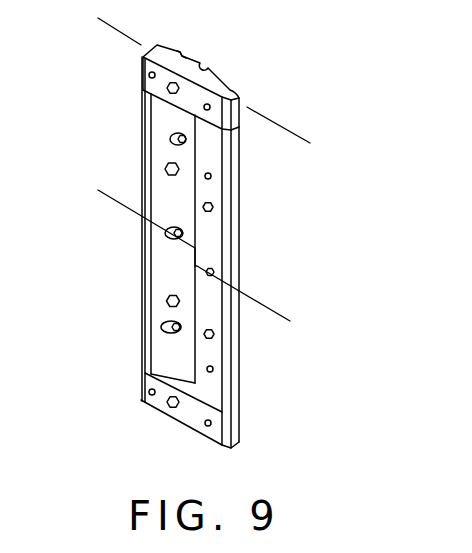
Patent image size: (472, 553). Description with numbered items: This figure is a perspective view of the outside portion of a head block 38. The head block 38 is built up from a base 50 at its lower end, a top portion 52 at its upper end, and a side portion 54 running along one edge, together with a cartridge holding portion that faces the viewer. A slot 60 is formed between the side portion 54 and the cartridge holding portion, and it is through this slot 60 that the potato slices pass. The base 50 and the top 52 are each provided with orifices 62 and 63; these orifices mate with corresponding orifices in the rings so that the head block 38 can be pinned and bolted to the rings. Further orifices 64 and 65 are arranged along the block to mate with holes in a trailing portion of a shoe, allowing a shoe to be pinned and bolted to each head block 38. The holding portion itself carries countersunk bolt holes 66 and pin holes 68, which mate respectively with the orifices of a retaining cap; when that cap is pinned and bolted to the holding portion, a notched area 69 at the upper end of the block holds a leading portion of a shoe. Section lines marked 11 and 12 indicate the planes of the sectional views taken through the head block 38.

The section line 11- 11 is at (113, 2).
The section line 12- 12 is at (113, 173).
The head block 38 is at (120, 142).
The base 50 is at (195, 417).
The top portion 52 is at (215, 83).
The side portion 54 is at (232, 247).
The slot 60 is at (170, 353).
The orifice 62 is at (150, 394).
The orifice 63 is at (170, 408).
The orifice 64 is at (212, 178).
The orifice 65 is at (213, 210).
The countersunk bolt hole 66 is at (162, 327).
The pin hole 68 is at (166, 300).
The notched area 69 is at (174, 40).